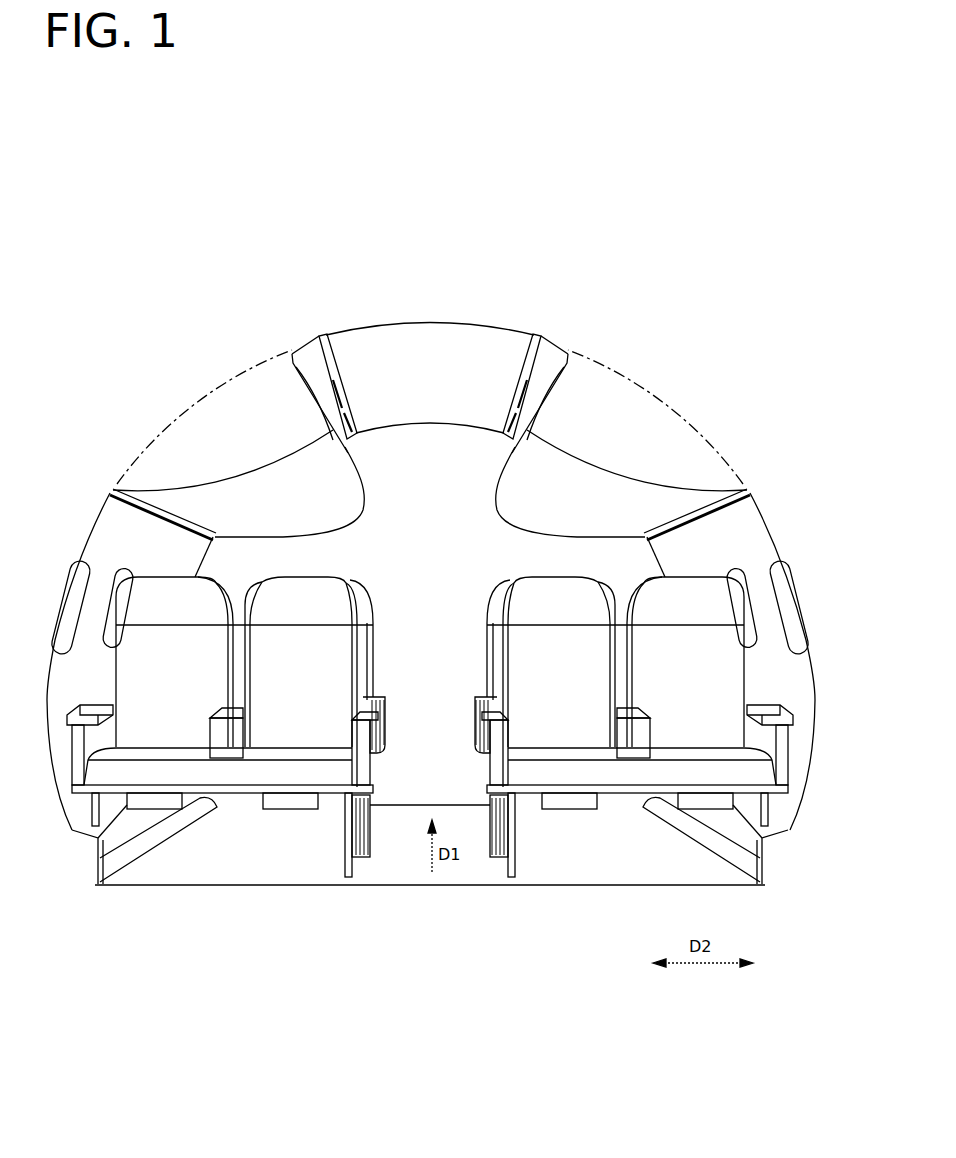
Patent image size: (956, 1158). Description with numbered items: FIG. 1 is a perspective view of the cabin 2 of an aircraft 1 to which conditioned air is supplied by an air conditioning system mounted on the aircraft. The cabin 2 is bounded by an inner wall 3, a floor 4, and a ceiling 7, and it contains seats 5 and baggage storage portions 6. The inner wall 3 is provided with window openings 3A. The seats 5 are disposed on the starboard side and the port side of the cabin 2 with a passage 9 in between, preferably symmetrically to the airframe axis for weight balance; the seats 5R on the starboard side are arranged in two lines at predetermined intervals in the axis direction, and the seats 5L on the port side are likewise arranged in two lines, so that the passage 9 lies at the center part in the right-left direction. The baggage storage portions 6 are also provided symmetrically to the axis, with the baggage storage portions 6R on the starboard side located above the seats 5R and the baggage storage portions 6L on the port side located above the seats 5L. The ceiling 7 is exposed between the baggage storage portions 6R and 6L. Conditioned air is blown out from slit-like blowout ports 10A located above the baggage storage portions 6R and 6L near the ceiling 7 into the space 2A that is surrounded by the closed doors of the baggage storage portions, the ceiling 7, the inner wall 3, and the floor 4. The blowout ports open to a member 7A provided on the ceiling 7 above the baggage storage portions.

The aircraft 1 is at (740, 280).
The cabin 2 is at (146, 384).
The space 2A is at (448, 560).
The inner wall 3 is at (100, 522).
The window opening 3A is at (77, 620).
The floor 4 is at (252, 870).
The seat 5 is at (430, 727).
The starboard-side seat 5R is at (188, 680).
The port-side seat 5L is at (575, 680).
The baggage storage portion 6 is at (430, 451).
The starboard-side baggage storage portion 6R is at (256, 433).
The port-side baggage storage portion 6L is at (632, 433).
The ceiling 7 is at (439, 387).
The member provided on the ceiling 7A is at (308, 354).
The passage 9 is at (439, 697).
The blowout port 10A is at (343, 385).